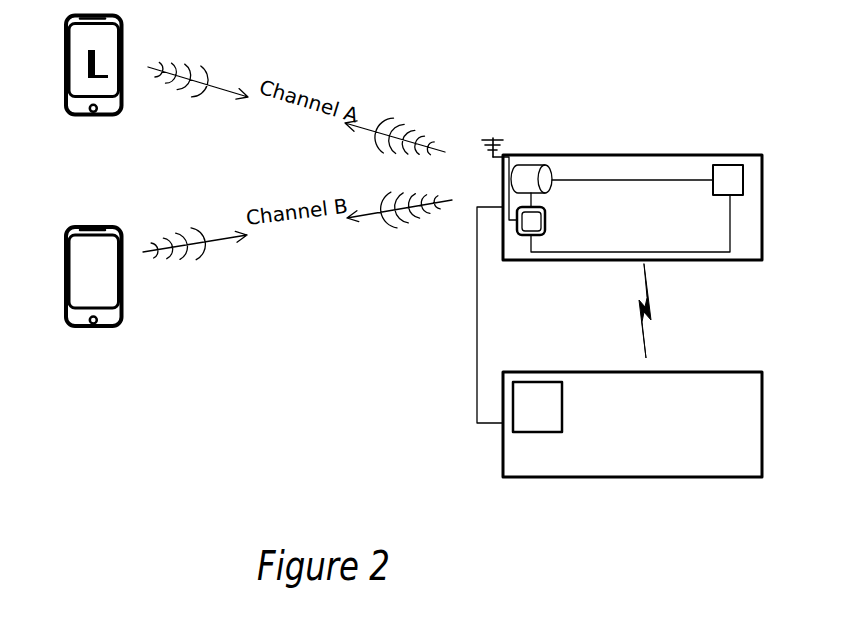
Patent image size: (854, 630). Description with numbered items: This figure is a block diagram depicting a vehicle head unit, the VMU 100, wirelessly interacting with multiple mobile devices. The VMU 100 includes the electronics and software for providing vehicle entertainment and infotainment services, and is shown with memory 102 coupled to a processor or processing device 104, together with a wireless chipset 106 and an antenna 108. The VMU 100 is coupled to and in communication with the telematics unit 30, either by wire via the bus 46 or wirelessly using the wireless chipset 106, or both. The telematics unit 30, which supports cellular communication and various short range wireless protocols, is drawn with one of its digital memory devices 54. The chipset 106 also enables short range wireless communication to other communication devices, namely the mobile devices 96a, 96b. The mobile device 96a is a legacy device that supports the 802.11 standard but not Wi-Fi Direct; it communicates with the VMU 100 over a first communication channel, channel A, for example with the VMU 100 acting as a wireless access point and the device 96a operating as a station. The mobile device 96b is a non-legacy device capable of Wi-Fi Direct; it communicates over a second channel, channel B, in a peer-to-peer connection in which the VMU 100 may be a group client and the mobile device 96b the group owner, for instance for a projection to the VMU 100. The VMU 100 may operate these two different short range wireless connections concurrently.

The mobile device 96a is at (62, 105).
The mobile device 96b is at (62, 317).
The VMU 100 is at (744, 262).
The memory 102 is at (527, 165).
The processor 104 is at (717, 165).
The wireless chipset 106 is at (545, 232).
The antenna 108 is at (492, 157).
The bus 46 is at (478, 300).
The telematics unit 30 is at (503, 448).
The digital memory device 54 is at (527, 382).